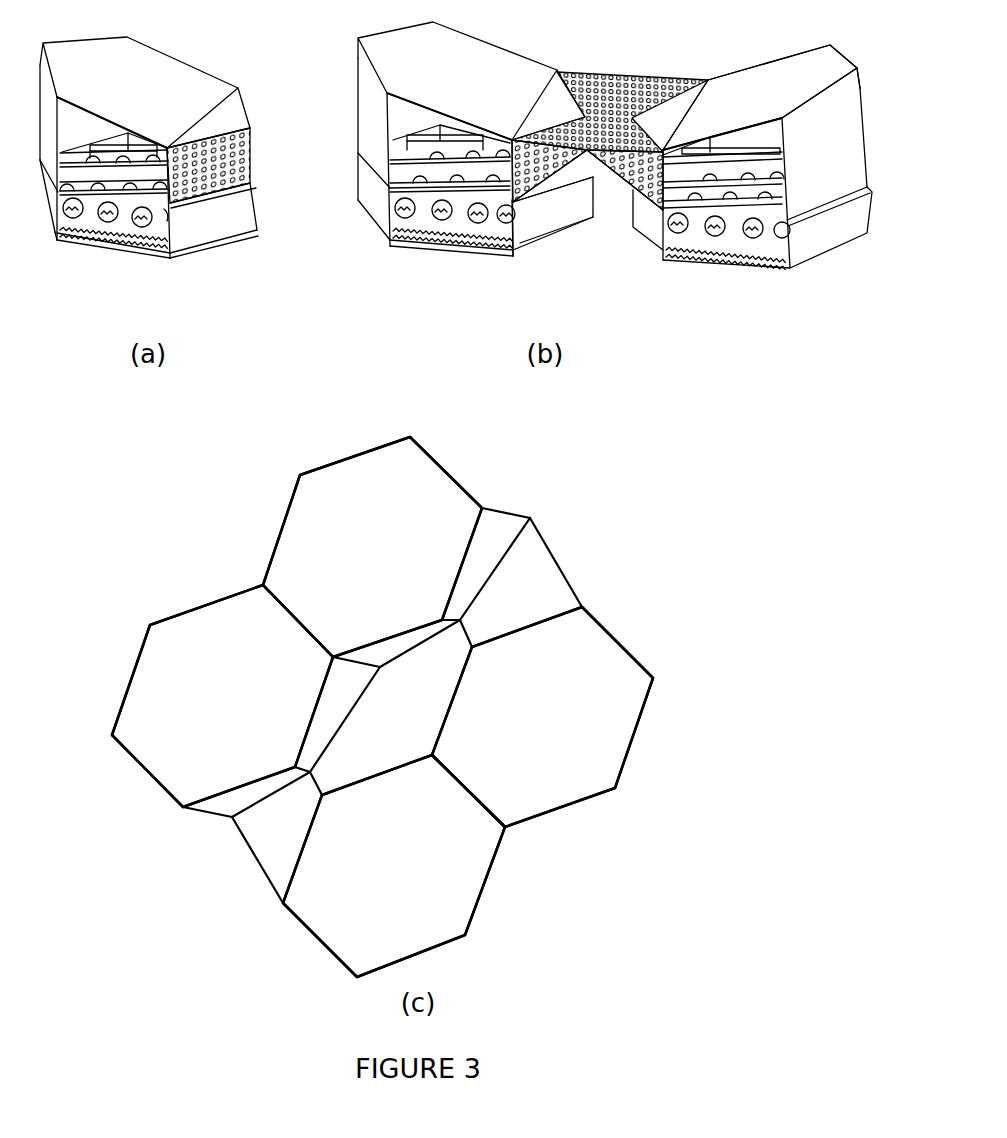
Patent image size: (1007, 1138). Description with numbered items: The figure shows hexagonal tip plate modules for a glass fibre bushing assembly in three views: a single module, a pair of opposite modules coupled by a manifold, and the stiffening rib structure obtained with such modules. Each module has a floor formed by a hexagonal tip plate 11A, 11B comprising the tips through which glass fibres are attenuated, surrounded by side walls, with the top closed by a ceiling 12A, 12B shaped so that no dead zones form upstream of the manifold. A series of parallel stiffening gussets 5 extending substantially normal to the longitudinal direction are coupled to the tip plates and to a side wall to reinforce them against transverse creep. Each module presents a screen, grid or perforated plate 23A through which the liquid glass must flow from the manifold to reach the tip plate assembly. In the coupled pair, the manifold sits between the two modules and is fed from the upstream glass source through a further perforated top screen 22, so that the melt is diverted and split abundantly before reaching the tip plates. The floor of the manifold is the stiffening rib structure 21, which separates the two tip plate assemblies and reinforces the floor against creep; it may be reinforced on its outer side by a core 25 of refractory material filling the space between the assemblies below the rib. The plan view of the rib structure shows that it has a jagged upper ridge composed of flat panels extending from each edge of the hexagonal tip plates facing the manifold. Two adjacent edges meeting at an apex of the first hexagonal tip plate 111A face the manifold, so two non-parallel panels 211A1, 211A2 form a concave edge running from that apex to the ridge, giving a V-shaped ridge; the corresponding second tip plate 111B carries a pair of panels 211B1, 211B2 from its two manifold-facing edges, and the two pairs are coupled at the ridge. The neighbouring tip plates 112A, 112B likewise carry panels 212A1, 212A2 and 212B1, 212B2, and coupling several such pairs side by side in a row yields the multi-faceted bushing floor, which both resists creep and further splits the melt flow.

The ceiling 12A is at (162, 82).
The ceiling 12B is at (772, 82).
The top screen 22 is at (610, 72).
The stiffening rib structure 21 is at (545, 505).
The perforated plate 23A is at (250, 173).
The refractory core 25 is at (517, 230).
The first hexagonal tip plate 111A is at (85, 242).
The first tip plate 112A is at (357, 463).
The second tip plate 111B is at (478, 888).
The second tip plate 112B is at (628, 732).
The tip plate 11A is at (452, 462).
The tip plate 11B is at (623, 627).
The stiffening gusset 5 is at (133, 228).
The panel 212A1 is at (393, 632).
The panel 212A2 is at (503, 518).
The panel 212B1 is at (430, 670).
The panel 212B2 is at (562, 568).
The panel 211A1 is at (342, 690).
The panel 211A2 is at (212, 815).
The panel 211B1 is at (395, 735).
The panel 211B2 is at (260, 870).